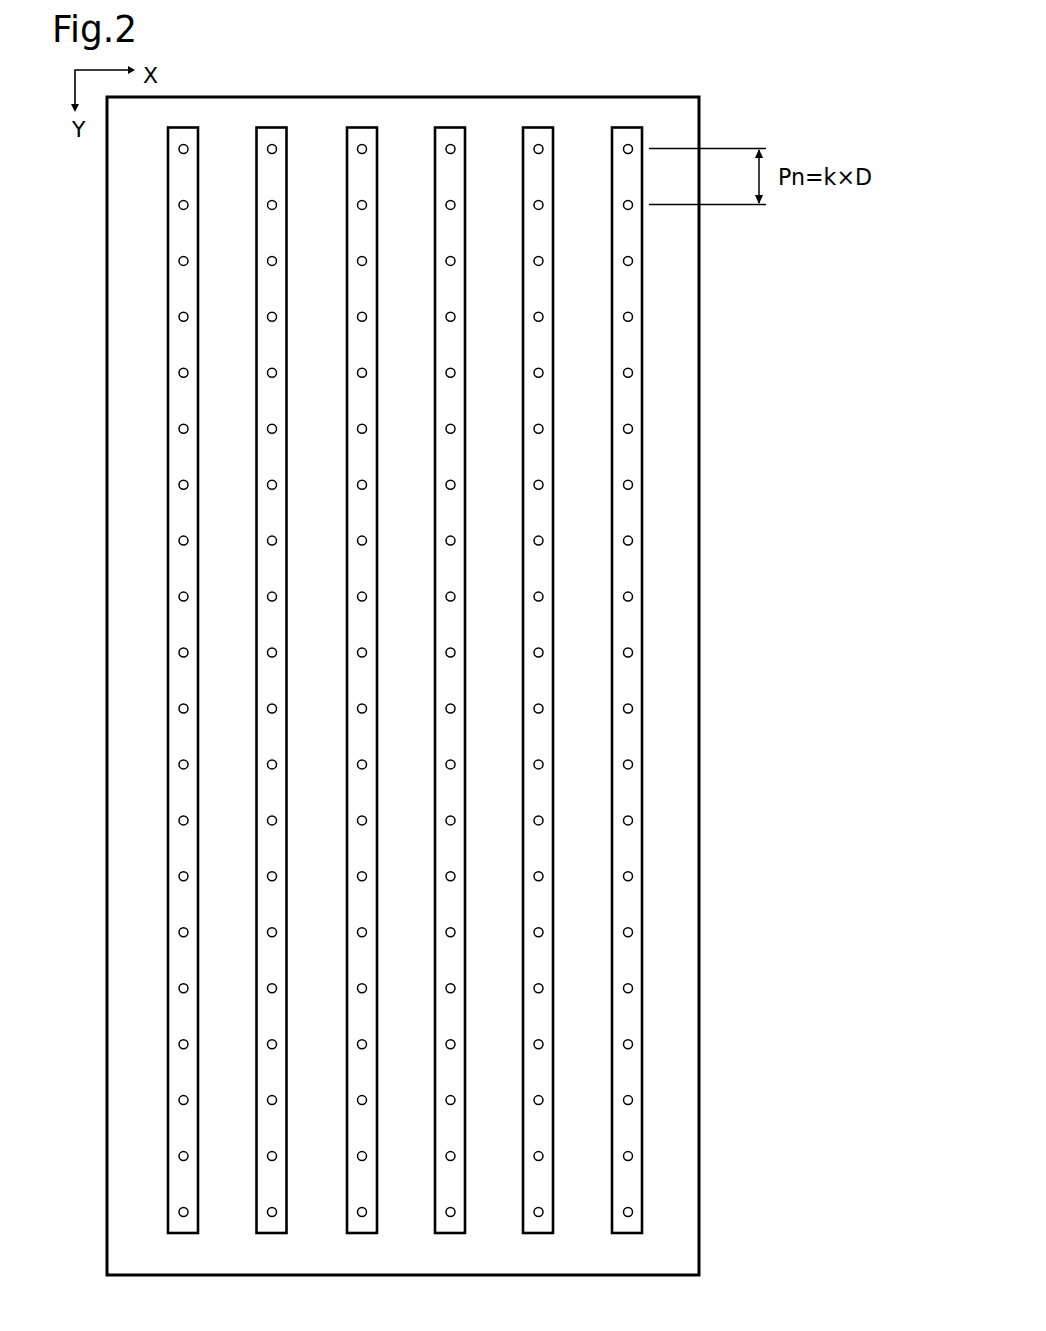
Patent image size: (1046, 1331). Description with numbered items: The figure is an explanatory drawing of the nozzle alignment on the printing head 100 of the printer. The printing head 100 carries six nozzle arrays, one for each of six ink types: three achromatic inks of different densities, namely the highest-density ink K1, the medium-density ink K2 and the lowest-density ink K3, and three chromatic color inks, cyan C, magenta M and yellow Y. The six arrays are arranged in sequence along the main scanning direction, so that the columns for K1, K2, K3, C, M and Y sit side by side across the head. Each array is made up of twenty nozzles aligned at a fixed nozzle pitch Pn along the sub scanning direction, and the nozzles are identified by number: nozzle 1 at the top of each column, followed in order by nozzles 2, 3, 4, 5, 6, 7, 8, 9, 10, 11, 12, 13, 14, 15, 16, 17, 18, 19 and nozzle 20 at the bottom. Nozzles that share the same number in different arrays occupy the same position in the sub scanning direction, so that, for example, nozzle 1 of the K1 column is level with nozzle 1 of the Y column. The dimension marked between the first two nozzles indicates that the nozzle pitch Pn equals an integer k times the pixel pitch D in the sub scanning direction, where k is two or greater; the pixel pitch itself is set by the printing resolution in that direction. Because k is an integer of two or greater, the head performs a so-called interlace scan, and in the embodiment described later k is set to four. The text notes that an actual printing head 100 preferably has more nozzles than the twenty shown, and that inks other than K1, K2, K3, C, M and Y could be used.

The printing head 100 is at (650, 97).
The highest-density achromatic ink K1 is at (183, 700).
The medium-density achromatic ink K2 is at (272, 700).
The lowest-density achromatic ink K3 is at (362, 700).
The cyan ink C is at (450, 700).
The magenta ink M is at (538, 700).
The yellow ink Y is at (627, 700).
The nozzle # 1 is at (384, 149).
The nozzle # 2 is at (384, 204).
The nozzle # 3 is at (384, 260).
The nozzle # 4 is at (384, 316).
The nozzle # 5 is at (384, 372).
The nozzle # 6 is at (384, 428).
The nozzle # 7 is at (384, 484).
The nozzle # 8 is at (384, 540).
The nozzle # 9 is at (384, 596).
The nozzle # 10 is at (377, 652).
The nozzle # 11 is at (377, 708).
The nozzle # 12 is at (377, 764).
The nozzle # 13 is at (377, 820).
The nozzle # 14 is at (377, 876).
The nozzle # 15 is at (377, 932).
The nozzle # 16 is at (377, 988).
The nozzle # 17 is at (377, 1044).
The nozzle # 18 is at (377, 1100).
The nozzle # 19 is at (377, 1156).
The nozzle # 20 is at (377, 1212).